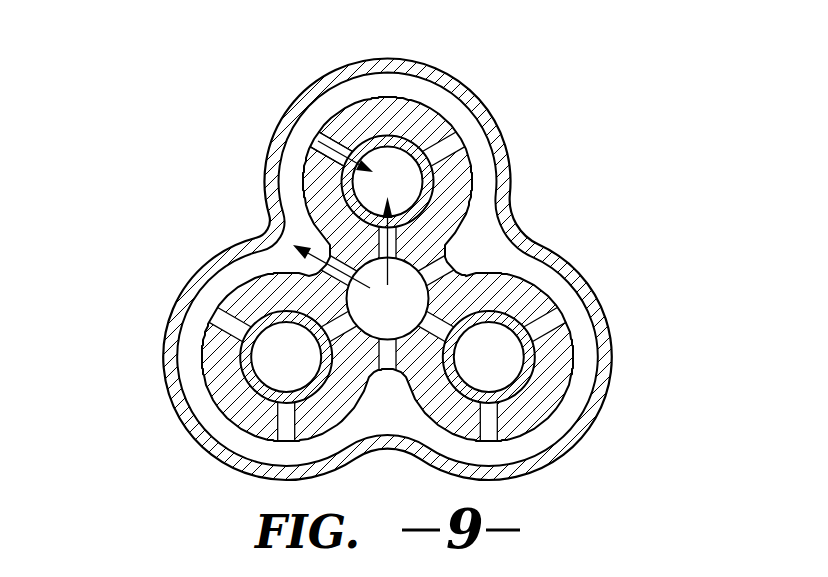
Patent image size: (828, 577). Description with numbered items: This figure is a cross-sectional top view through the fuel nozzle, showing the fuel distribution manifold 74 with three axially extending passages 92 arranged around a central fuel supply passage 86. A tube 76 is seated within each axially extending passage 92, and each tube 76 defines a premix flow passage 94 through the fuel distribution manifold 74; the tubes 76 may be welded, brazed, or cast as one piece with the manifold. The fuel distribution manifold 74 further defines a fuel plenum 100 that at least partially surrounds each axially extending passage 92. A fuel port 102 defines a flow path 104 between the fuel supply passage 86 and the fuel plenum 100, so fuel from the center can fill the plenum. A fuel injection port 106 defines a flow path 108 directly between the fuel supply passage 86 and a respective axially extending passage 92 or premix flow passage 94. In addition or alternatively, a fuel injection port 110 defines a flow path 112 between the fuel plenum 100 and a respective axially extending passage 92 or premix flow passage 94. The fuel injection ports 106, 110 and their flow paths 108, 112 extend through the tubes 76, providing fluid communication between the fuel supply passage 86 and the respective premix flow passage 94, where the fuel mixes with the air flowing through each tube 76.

The fuel distribution manifold 74 is at (164, 402).
The tube 76 is at (370, 145).
The fuel supply passage 86 is at (372, 326).
The axially extending passage 92 is at (370, 150).
The premix flow passage 94 is at (381, 188).
The fuel plenum 100 is at (588, 332).
The fuel port 102 is at (257, 283).
The flow path 104 is at (330, 258).
The fuel injection port 106 is at (442, 243).
The flow path 108 is at (472, 202).
The fuel injection port 110 is at (333, 135).
The flow path 112 is at (305, 133).